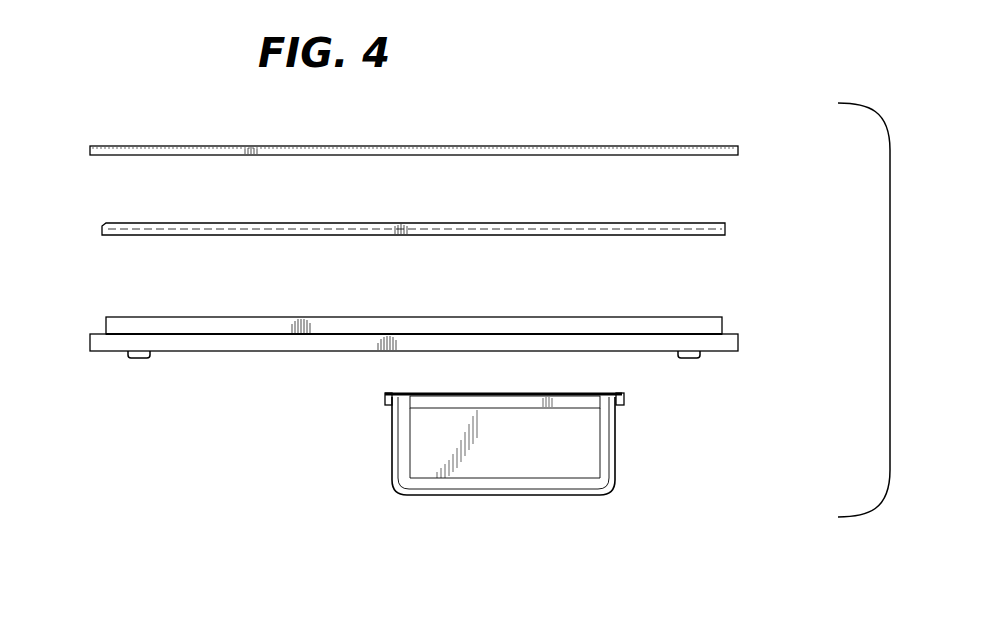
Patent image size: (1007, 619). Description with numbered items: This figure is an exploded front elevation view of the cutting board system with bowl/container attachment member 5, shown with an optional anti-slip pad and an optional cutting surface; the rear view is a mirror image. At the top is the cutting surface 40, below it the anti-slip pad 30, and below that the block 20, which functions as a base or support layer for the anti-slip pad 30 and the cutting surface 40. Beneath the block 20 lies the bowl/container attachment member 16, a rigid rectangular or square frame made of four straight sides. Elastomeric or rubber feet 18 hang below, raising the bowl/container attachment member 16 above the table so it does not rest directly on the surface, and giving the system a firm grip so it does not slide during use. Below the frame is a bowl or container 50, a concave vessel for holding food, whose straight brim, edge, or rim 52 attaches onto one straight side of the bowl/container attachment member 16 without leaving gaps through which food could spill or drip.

The cutting board system with bowl/container attachment member 5 is at (118, 98).
The cutting surface 40 is at (738, 150).
The anti-slip pad 30 is at (725, 228).
The block 20 is at (722, 323).
The bowl/container attachment member 16 is at (738, 341).
The elastomeric or rubber feet 18 is at (140, 360).
The bowl or container 50 is at (458, 497).
The straight brim, edge, or rim 52 is at (385, 400).